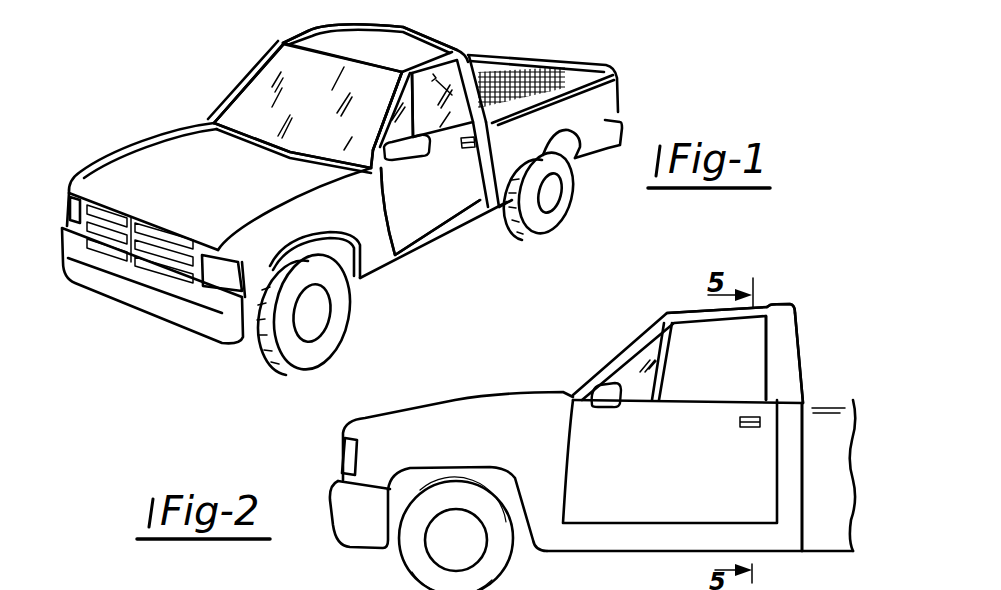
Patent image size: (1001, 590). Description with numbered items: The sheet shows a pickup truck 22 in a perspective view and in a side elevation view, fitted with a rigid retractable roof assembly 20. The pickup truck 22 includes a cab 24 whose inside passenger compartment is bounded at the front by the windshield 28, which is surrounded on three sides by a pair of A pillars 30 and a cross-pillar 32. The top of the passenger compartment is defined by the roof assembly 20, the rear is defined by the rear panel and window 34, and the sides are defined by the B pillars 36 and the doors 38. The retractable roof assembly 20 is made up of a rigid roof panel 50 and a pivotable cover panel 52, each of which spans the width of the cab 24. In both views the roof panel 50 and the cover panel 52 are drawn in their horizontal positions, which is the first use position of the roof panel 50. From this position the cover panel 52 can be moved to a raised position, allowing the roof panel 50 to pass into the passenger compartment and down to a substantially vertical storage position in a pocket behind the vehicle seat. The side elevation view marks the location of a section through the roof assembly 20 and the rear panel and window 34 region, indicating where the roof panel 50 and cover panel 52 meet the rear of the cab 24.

In FIG. 1, the retractable roof assembly 20 is at (312, 26).
In FIG. 1, the pickup truck 22 is at (390, 274).
In FIG. 1, the cab 24 is at (438, 170).
In FIG. 1, the windshield 28 is at (323, 110).
In FIG. 1, the A pillars 30 is at (236, 96).
In FIG. 1, the cross-pillar 32 is at (345, 58).
In FIG. 2, the rear panel and window 34 is at (800, 353).
In FIG. 2, the B pillars 36 is at (783, 370).
In FIG. 2, the doors 38 is at (672, 481).
In FIG. 2, the rigid roof panel 50 is at (696, 303).
In FIG. 2, the pivotable cover panel 52 is at (792, 298).